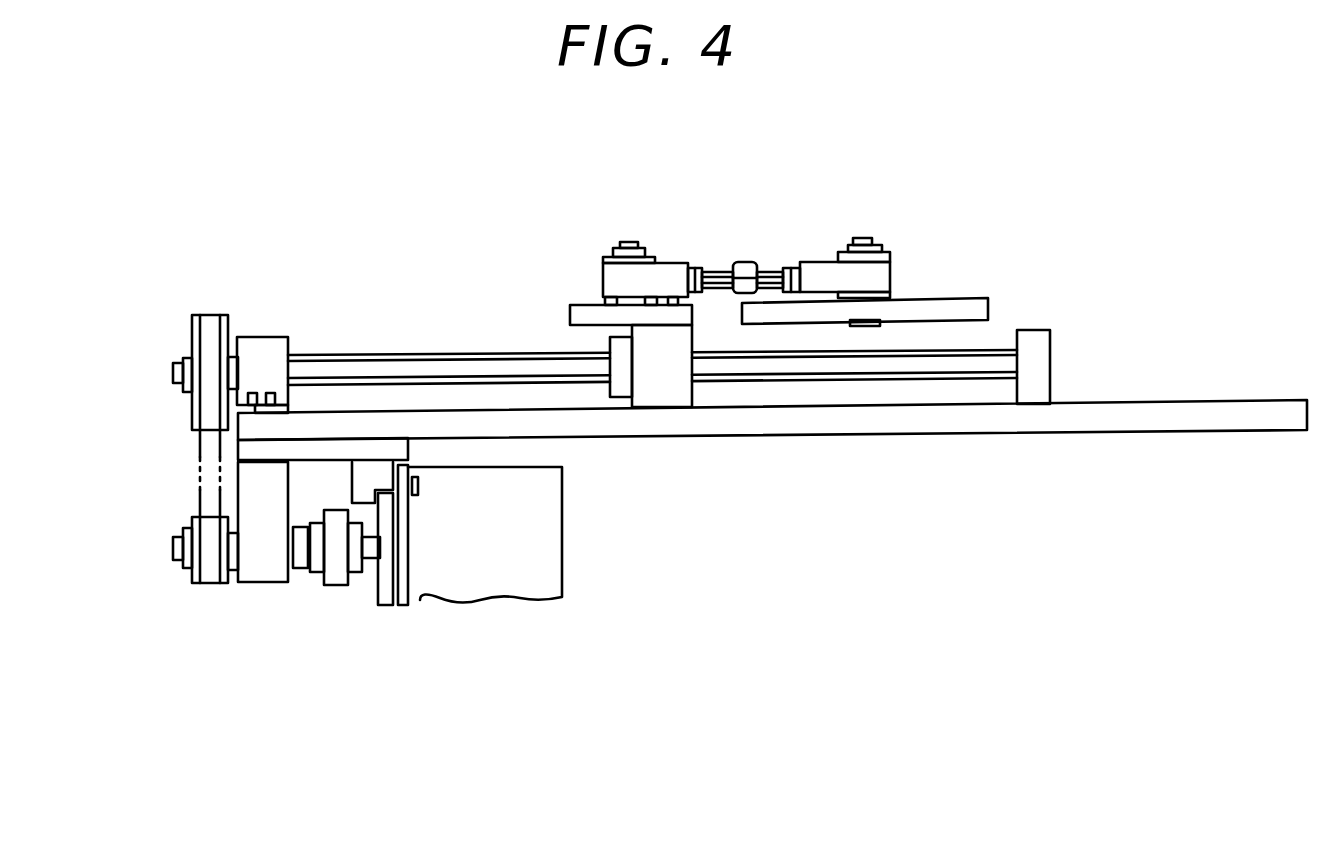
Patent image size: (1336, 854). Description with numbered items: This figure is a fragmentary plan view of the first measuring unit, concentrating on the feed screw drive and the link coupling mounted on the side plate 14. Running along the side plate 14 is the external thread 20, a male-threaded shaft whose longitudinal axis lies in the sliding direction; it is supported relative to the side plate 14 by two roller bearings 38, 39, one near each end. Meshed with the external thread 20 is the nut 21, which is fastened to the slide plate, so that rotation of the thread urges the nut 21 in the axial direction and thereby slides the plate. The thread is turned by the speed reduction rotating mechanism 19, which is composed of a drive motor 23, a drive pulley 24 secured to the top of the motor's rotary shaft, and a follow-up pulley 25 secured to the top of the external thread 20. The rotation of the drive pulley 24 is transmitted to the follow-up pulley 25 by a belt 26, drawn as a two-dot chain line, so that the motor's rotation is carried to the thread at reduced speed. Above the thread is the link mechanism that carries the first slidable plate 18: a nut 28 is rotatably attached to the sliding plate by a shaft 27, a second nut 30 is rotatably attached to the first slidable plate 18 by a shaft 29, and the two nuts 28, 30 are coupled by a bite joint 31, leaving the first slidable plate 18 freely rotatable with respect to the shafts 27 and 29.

The side plate 14 is at (1258, 410).
The first slidable plate 18 is at (977, 306).
The speed reduction rotating mechanism 19 is at (166, 410).
The external thread 20 is at (365, 368).
The nut 21 is at (655, 393).
The drive motor 23 is at (548, 548).
The drive pulley 24 is at (212, 580).
The follow-up pulley 25 is at (210, 316).
The belt 26 is at (196, 490).
The shaft 27 is at (626, 241).
The nut 28 is at (612, 278).
The shaft 29 is at (862, 242).
The nut 30 is at (877, 278).
The bite joint 31 is at (745, 264).
The roller bearing 38 is at (265, 336).
The roller bearing 39 is at (1035, 350).